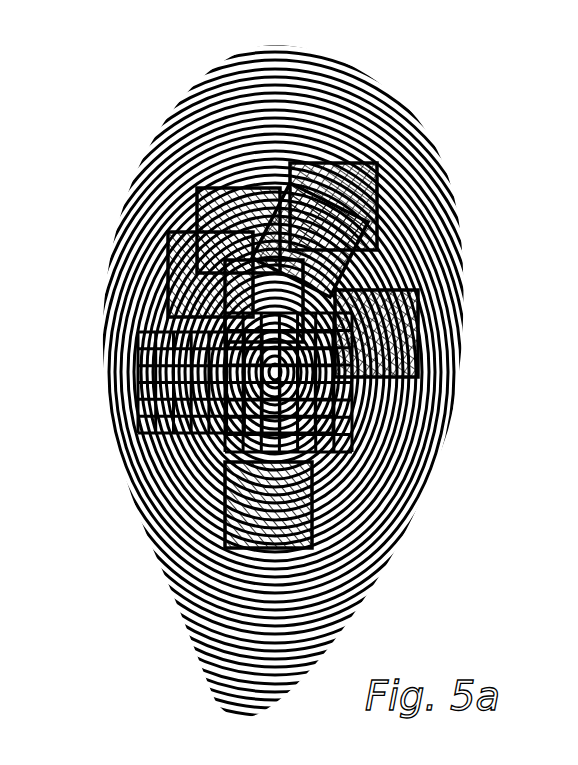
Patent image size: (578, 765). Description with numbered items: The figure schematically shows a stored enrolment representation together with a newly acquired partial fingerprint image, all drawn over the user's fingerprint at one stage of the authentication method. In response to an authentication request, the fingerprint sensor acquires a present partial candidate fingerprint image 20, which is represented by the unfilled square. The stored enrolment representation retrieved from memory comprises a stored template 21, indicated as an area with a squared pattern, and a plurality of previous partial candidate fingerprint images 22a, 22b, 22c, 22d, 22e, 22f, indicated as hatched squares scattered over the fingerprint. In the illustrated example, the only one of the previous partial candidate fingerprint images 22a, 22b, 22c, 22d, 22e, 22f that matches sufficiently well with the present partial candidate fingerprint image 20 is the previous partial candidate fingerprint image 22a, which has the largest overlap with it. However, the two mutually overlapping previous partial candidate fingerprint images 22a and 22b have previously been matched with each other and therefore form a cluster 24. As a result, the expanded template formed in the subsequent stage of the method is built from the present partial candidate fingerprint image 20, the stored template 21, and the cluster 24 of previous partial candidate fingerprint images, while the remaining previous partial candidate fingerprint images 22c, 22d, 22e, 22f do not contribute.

The present partial candidate fingerprint image 20 is at (138, 331).
The stored template 21 is at (155, 433).
The previous partial candidate fingerprint image 22a is at (182, 228).
The previous partial candidate fingerprint image 22b is at (252, 187).
The previous partial candidate fingerprint image 22c is at (380, 200).
The previous partial candidate fingerprint image 22d is at (340, 278).
The previous partial candidate fingerprint image 22e is at (393, 343).
The previous partial candidate fingerprint image 22f is at (312, 510).
The cluster 24 is at (232, 187).